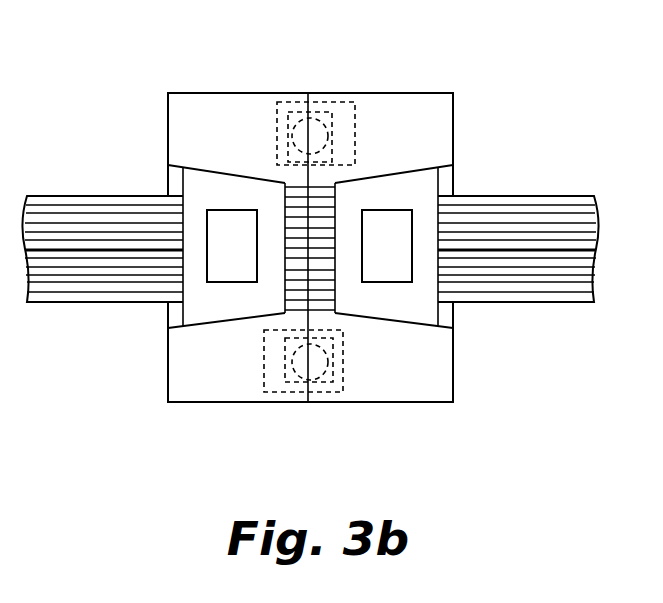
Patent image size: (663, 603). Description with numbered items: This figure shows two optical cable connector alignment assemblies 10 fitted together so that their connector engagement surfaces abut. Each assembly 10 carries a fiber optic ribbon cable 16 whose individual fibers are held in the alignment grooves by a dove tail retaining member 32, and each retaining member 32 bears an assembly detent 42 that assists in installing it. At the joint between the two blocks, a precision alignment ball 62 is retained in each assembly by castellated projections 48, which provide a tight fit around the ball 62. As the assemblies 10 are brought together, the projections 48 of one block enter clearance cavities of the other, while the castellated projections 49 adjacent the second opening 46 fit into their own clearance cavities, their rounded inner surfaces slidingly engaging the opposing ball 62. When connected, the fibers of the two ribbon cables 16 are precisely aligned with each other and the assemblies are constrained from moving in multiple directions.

The optical cable connector alignment assembly 10 is at (167, 97).
The optical cable 16 is at (85, 195).
The dove tail retaining member 32 is at (171, 319).
The assembly detent 42 is at (218, 258).
The second opening 46 is at (288, 98).
The castellated projections 48 is at (291, 110).
The castellated projections 49 is at (352, 98).
The precision alignment ball 62 is at (329, 98).